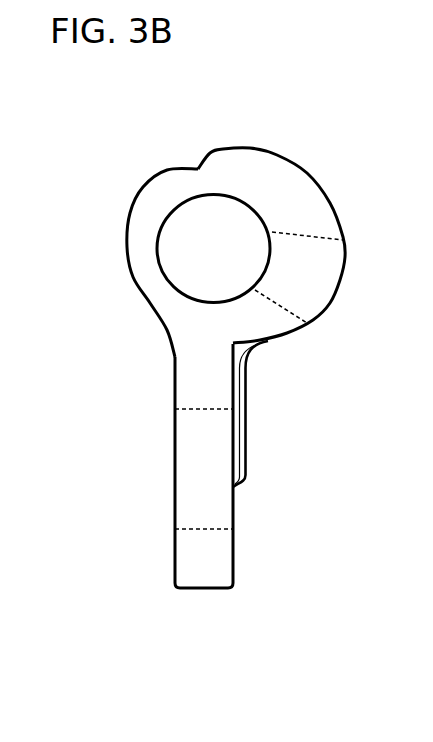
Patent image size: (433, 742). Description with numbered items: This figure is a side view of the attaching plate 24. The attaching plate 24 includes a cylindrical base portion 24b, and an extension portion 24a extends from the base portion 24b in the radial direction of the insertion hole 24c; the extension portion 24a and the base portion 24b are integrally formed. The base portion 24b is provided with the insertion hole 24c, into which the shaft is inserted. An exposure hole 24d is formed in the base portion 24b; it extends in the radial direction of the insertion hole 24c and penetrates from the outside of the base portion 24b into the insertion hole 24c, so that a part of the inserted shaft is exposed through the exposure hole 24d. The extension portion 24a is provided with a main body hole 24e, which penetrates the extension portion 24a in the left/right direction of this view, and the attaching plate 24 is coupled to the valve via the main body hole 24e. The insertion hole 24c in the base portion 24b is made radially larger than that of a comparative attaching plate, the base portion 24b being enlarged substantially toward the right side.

The attaching plate 24 is at (201, 145).
The extension portion 24a is at (175, 392).
The base portion 24b is at (130, 277).
The insertion hole 24c is at (271, 259).
The exposure hole 24d is at (277, 303).
The main body hole 24e is at (218, 529).